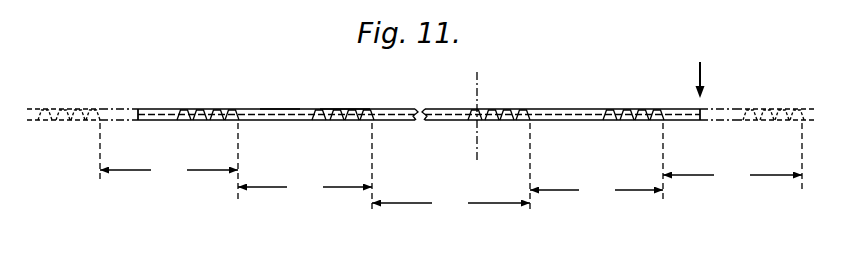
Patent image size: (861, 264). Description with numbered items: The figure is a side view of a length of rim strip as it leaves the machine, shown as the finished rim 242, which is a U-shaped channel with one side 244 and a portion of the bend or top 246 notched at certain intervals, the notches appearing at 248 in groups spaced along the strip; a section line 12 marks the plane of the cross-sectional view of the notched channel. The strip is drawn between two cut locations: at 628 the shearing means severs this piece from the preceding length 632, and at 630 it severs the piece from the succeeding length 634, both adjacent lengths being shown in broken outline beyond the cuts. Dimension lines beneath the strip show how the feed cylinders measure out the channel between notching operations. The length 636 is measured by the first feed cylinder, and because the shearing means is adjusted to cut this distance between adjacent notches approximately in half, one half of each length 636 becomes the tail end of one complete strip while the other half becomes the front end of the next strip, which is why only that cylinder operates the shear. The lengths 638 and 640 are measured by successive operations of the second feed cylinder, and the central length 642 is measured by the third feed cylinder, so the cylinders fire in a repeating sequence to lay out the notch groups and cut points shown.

The section line 12- 12 is at (446, 78).
The finished rim 242 is at (343, 98).
The side of channel 244 is at (278, 121).
The bend of channel 246 is at (282, 108).
The notches 248 is at (230, 122).
The shear location 628 is at (136, 113).
The shear location 630 is at (702, 119).
The preceding length 632 is at (86, 108).
The succeeding length 634 is at (770, 113).
The length measured by first feed cylinder 636 is at (451, 173).
The length measured by second feed cylinder 638 is at (305, 188).
The length measured by second feed cylinder 640 is at (596, 191).
The length measured by third feed cylinder 642 is at (451, 204).